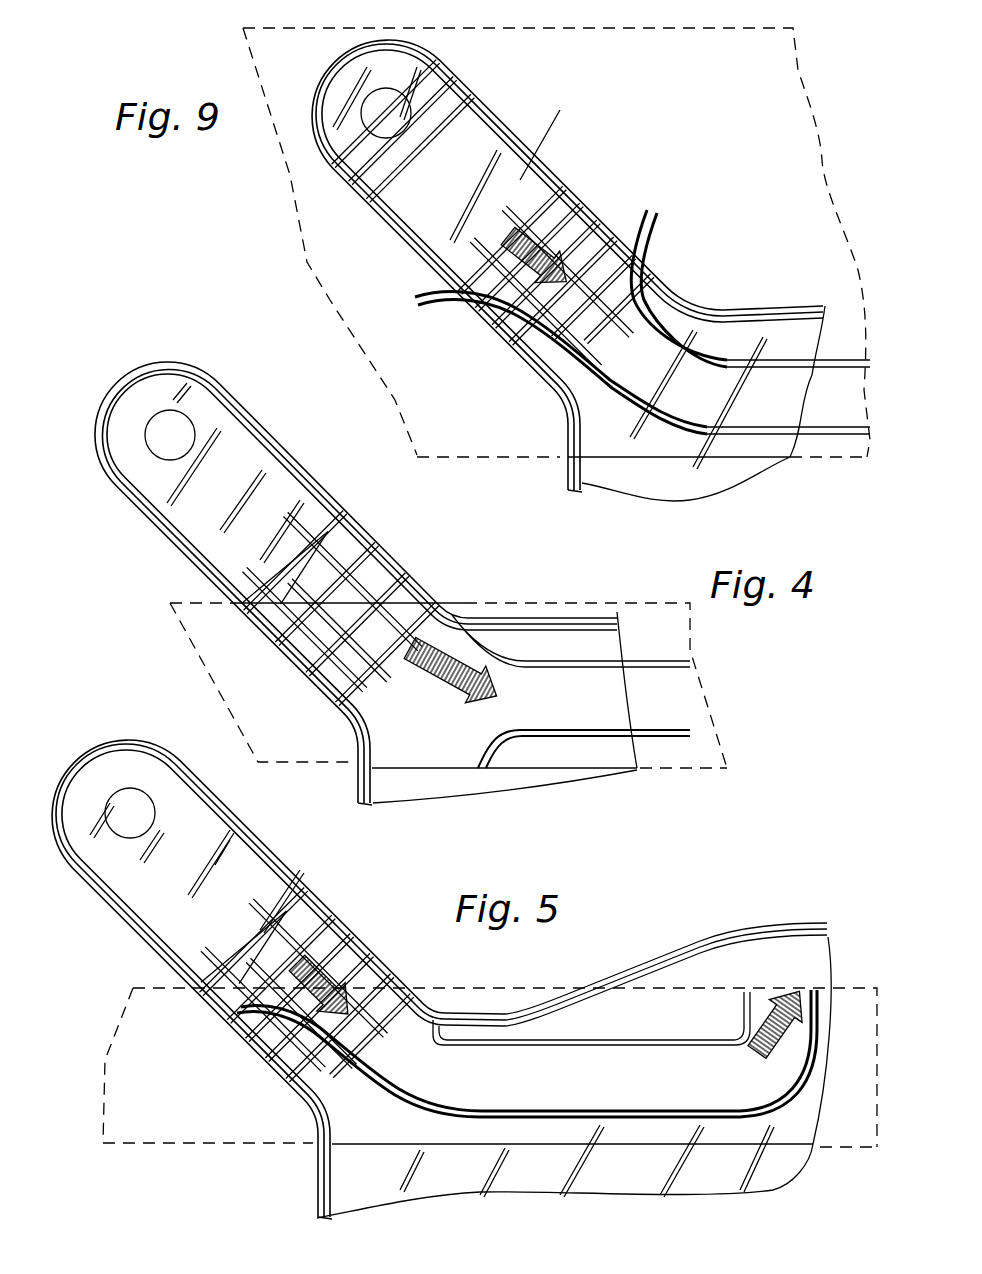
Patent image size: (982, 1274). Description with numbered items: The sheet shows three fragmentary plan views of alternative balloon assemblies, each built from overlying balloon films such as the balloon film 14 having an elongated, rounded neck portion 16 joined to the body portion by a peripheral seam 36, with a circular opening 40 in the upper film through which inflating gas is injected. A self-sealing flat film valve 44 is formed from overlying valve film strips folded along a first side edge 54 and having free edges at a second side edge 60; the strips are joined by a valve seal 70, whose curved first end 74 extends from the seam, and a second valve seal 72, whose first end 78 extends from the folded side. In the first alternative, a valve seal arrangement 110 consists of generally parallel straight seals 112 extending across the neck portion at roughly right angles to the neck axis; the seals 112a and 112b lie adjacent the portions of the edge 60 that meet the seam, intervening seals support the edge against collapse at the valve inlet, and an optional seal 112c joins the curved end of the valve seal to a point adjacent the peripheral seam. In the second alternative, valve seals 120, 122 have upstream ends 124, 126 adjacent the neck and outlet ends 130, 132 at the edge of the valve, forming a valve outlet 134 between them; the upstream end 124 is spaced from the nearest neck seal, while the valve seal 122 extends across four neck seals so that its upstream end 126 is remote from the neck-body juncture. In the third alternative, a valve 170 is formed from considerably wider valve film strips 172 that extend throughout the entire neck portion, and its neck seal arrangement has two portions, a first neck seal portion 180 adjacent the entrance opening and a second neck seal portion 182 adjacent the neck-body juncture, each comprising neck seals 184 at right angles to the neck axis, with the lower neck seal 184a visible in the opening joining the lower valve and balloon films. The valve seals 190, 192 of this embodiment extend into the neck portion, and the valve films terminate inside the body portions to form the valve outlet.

In FIG. 4, the balloon film 14 is at (540, 777).
In FIG. 9, the neck portion 16 is at (484, 140).
In FIG. 4, the neck portion 16 is at (293, 483).
In FIG. 5, the neck portion 16 is at (220, 840).
In FIG. 9, the peripheral seam 36 is at (463, 93).
In FIG. 4, the peripheral seam 36 is at (267, 433).
In FIG. 5, the peripheral seam 36 is at (177, 768).
In FIG. 9, the circular opening 40 is at (367, 105).
In FIG. 4, the circular opening 40 is at (190, 422).
In FIG. 5, the circular opening 40 is at (128, 790).
In FIG. 4, the valve 44 is at (448, 685).
In FIG. 5, the valve 44 is at (858, 1158).
In FIG. 9, the first side edge 54 is at (600, 488).
In FIG. 4, the first side edge 54 is at (433, 790).
In FIG. 5, the first side edge 54 is at (580, 1146).
In FIG. 4, the second side edge 60 is at (368, 555).
In FIG. 5, the second side edge 60 is at (650, 990).
In FIG. 4, the valve seal 70 is at (690, 661).
In FIG. 4, the second valve seal 72 is at (713, 733).
In FIG. 4, the first end of valve seal 74 is at (510, 645).
In FIG. 4, the first end of second valve seal 78 is at (514, 742).
In FIG. 4, the valve seal arrangement 110 is at (434, 583).
In FIG. 5, the valve seal arrangement 110 is at (469, 958).
In FIG. 4, the straight seals 112 is at (313, 628).
In FIG. 5, the straight seals 112 is at (317, 1008).
In FIG. 4, the seal 112a is at (262, 580).
In FIG. 4, the seal 112b is at (377, 668).
In FIG. 5, the seal 112b is at (353, 1037).
In FIG. 4, the seal 112c is at (367, 708).
In FIG. 5, the seal 112c is at (330, 1083).
In FIG. 5, the valve seal 120 is at (560, 1042).
In FIG. 5, the valve seal 122 is at (505, 1112).
In FIG. 5, the upstream end 124 is at (440, 1005).
In FIG. 5, the upstream end 126 is at (247, 1028).
In FIG. 5, the outlet end 130 is at (752, 988).
In FIG. 5, the outlet end 132 is at (823, 988).
In FIG. 5, the valve outlet 134 is at (830, 953).
In FIG. 9, the valve 170 is at (535, 285).
In FIG. 9, the valve film strips 172 is at (322, 275).
In FIG. 9, the first neck seal portion 180 is at (551, 264).
In FIG. 9, the second neck seal portion 182 is at (580, 193).
In FIG. 9, the neck seals 184 is at (405, 180).
In FIG. 9, the lower neck seal 184a is at (320, 185).
In FIG. 9, the valve seal 190 is at (728, 368).
In FIG. 9, the valve seal 192 is at (697, 432).